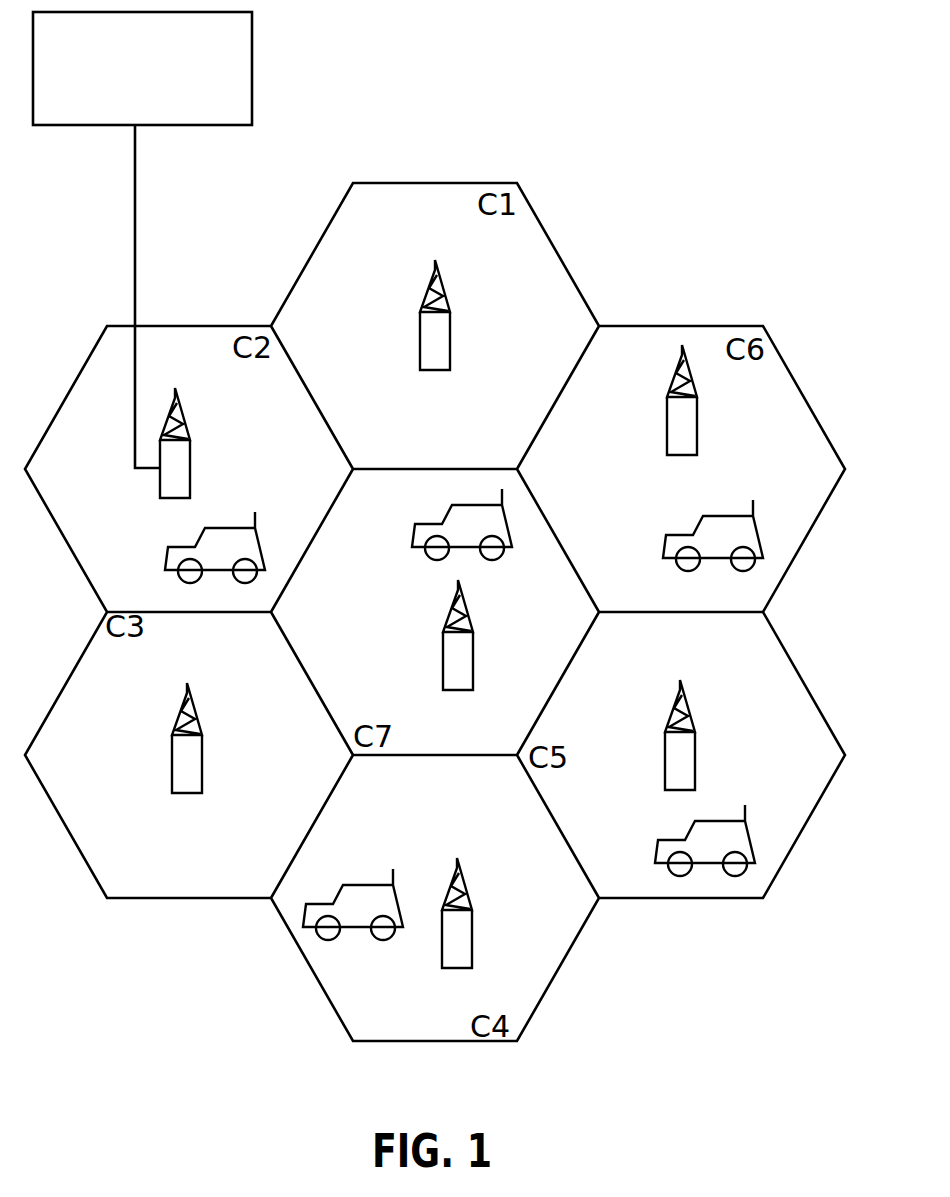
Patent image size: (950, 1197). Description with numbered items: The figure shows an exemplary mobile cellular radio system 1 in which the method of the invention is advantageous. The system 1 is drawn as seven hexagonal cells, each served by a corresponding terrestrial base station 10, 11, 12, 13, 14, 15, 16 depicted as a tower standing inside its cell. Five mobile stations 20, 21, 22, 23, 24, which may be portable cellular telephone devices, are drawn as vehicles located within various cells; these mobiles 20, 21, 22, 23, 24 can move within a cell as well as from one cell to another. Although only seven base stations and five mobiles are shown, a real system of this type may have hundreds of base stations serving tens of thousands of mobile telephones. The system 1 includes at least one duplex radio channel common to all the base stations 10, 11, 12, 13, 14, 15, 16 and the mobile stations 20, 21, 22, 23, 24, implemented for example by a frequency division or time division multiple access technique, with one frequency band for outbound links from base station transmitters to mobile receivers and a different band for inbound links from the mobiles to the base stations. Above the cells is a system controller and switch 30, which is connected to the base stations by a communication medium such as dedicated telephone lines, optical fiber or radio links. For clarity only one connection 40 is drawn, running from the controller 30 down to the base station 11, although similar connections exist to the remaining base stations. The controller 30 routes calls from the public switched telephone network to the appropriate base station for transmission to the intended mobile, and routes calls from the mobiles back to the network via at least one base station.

The mobile cellular radio system 1 is at (642, 138).
The system controller and switch 30 is at (253, 45).
The connection 40 is at (135, 217).
The terrestrial base station 10 is at (420, 333).
The terrestrial base station 11 is at (191, 473).
The terrestrial base station 12 is at (172, 760).
The terrestrial base station 13 is at (472, 928).
The terrestrial base station 14 is at (665, 757).
The terrestrial base station 15 is at (667, 421).
The terrestrial base station 16 is at (443, 657).
The mobile station 20 is at (168, 552).
The mobile station 21 is at (370, 885).
The mobile station 22 is at (665, 537).
The mobile station 23 is at (413, 530).
The mobile station 24 is at (657, 845).